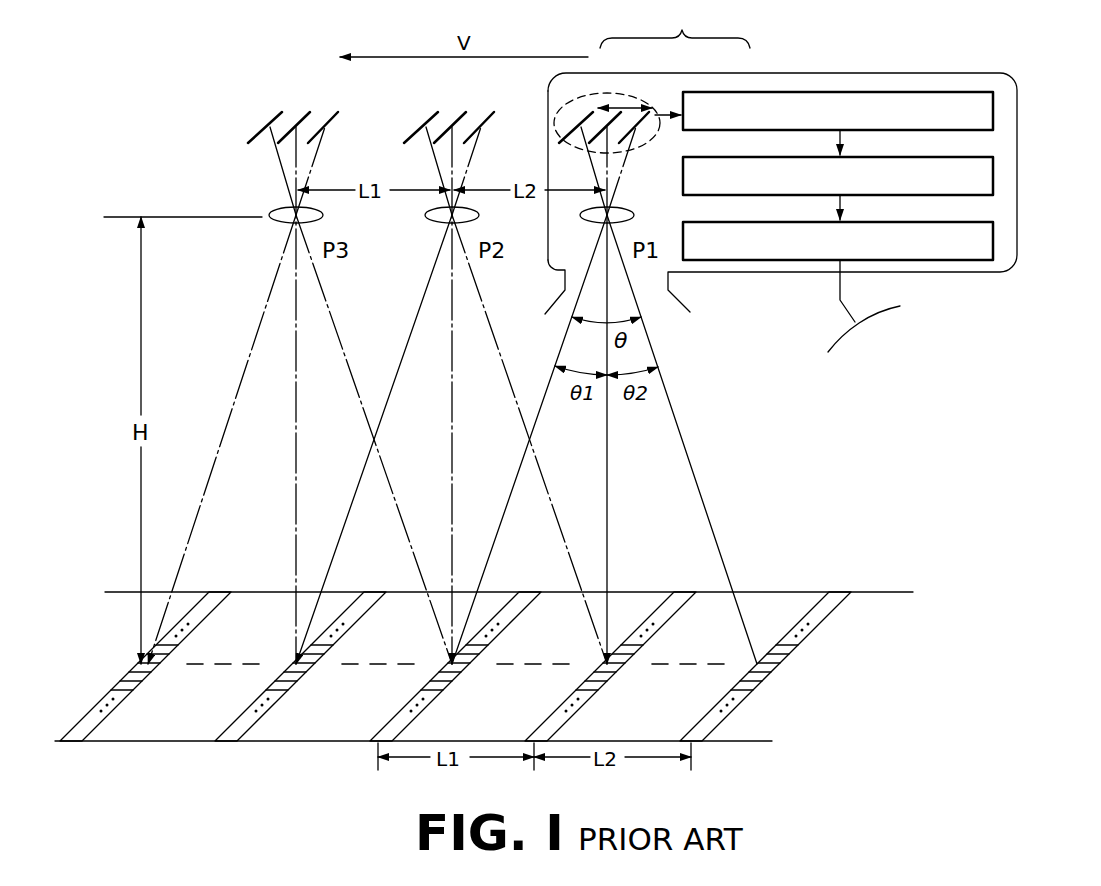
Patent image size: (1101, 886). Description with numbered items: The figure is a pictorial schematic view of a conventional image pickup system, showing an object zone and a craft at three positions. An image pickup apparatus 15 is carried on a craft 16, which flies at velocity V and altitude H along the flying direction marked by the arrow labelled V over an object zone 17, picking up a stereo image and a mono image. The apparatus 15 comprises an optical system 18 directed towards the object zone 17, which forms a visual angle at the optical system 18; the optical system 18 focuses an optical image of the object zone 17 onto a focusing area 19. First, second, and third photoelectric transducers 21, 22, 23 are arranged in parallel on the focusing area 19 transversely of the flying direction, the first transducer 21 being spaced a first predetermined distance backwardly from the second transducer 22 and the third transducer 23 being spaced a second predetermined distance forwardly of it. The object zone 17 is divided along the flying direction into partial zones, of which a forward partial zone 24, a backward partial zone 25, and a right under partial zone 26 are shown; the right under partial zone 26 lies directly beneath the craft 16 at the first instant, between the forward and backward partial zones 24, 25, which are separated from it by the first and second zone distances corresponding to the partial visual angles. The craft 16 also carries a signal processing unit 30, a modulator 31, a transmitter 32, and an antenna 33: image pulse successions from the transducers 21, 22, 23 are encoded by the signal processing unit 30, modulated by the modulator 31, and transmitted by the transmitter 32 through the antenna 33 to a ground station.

The image pickup apparatus 15 is at (669, 175).
The craft 16 is at (930, 73).
The object zone 17 is at (310, 752).
The optical system 18 is at (624, 212).
The focusing area 19 is at (548, 157).
The first photoelectric transducer 21 is at (655, 106).
The second photoelectric transducer 22 is at (626, 104).
The third photoelectric transducer 23 is at (598, 104).
The forward partial zone 24 is at (518, 602).
The backward partial zone 25 is at (822, 602).
The right under partial zone 26 is at (668, 602).
The signal processing unit 30 is at (995, 108).
The modulator 31 is at (995, 173).
The transmitter 32 is at (995, 238).
The antenna 33 is at (885, 312).